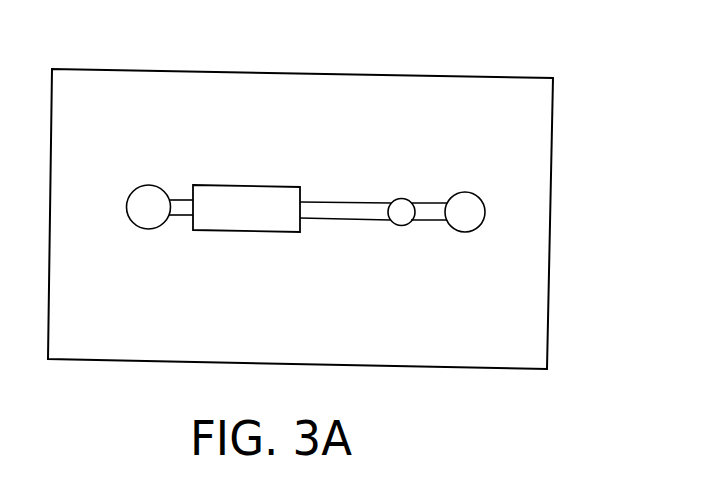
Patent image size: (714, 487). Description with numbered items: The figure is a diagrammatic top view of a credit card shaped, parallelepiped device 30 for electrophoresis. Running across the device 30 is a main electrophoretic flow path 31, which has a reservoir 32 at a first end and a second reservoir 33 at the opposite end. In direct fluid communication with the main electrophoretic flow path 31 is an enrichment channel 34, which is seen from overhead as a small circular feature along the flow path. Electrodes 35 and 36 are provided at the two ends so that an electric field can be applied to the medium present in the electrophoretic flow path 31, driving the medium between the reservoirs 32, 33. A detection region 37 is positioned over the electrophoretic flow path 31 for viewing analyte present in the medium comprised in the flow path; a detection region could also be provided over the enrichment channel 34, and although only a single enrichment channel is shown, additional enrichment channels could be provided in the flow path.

The device 30 is at (443, 46).
The main electrophoretic flow path 31 is at (352, 213).
The reservoir 32 is at (470, 225).
The reservoir 33 is at (150, 220).
The enrichment channel 34 is at (407, 220).
The electrode 35 is at (465, 213).
The electrode 36 is at (150, 207).
The detection region 37 is at (234, 208).